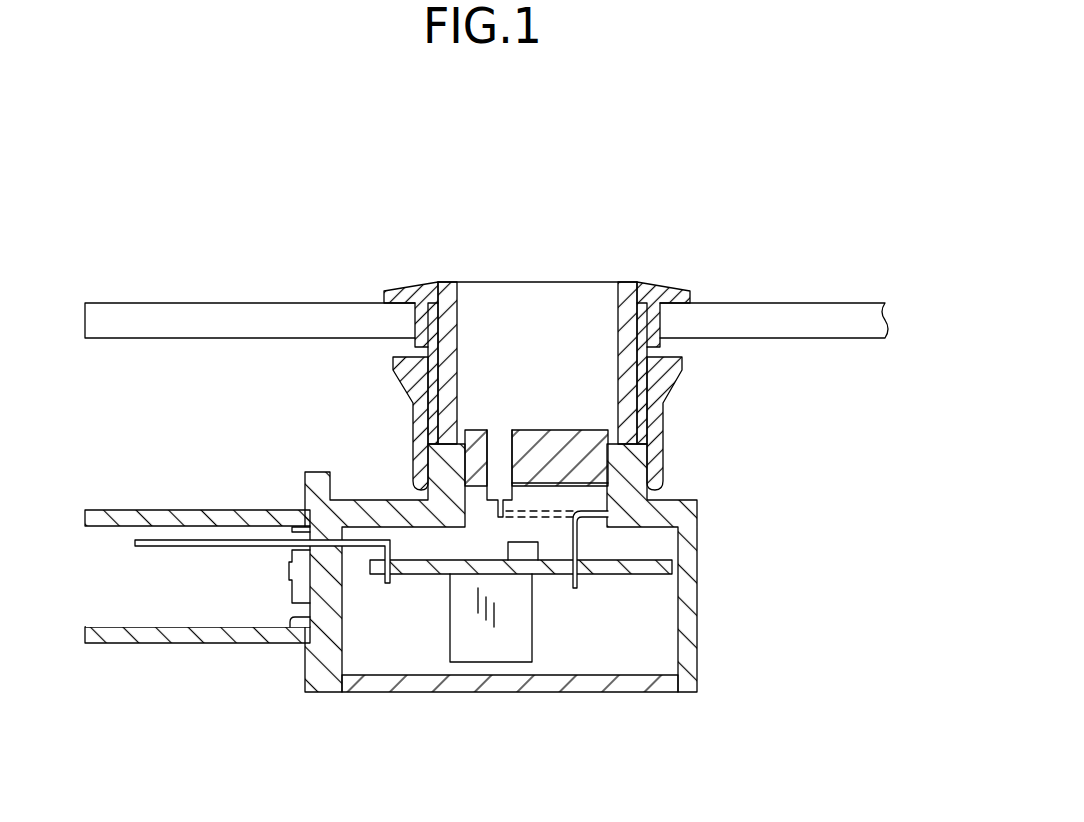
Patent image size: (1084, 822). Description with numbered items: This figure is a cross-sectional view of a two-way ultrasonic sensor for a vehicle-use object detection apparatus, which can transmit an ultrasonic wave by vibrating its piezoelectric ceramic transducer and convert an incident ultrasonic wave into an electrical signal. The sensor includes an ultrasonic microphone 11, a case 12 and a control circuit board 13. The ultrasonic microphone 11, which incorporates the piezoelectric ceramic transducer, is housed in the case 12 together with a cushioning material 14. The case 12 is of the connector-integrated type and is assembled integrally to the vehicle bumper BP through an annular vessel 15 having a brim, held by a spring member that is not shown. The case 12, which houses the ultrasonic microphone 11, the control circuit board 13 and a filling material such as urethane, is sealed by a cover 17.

The ultrasonic microphone 11 is at (537, 280).
The case 12 is at (675, 500).
The control circuit board 13 is at (658, 568).
The cushioning material 14 is at (625, 405).
The annular vessel 15 is at (415, 289).
The cover 17 is at (495, 692).
The vehicle bumper BP is at (825, 302).